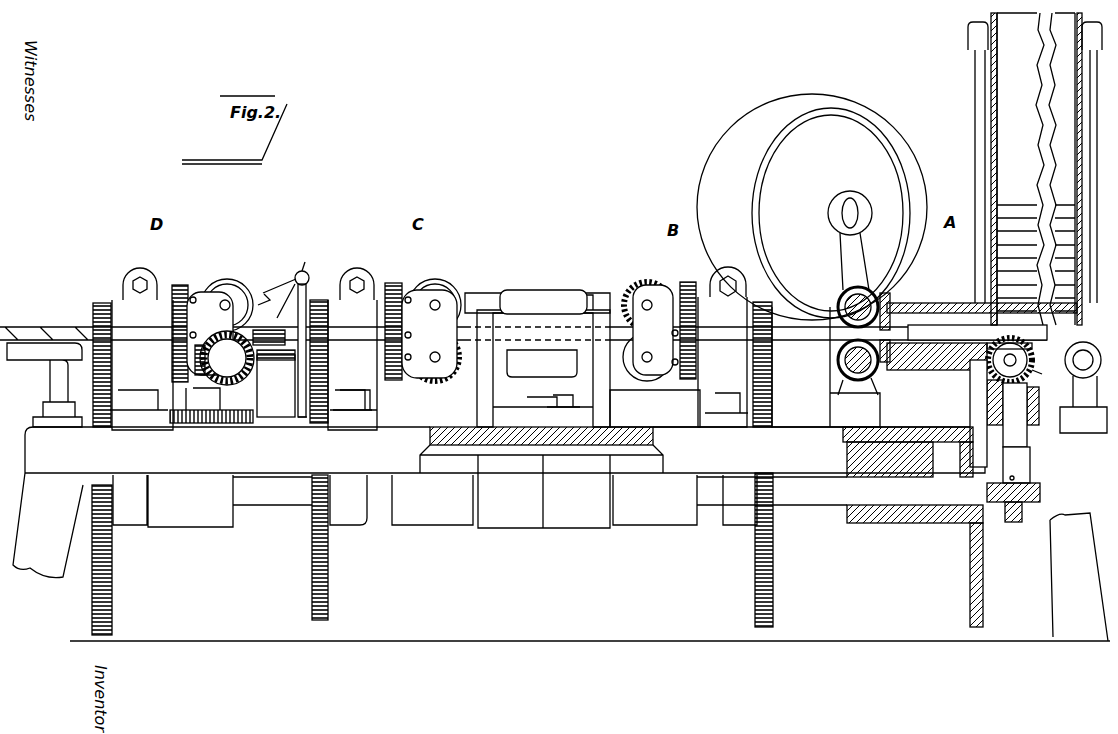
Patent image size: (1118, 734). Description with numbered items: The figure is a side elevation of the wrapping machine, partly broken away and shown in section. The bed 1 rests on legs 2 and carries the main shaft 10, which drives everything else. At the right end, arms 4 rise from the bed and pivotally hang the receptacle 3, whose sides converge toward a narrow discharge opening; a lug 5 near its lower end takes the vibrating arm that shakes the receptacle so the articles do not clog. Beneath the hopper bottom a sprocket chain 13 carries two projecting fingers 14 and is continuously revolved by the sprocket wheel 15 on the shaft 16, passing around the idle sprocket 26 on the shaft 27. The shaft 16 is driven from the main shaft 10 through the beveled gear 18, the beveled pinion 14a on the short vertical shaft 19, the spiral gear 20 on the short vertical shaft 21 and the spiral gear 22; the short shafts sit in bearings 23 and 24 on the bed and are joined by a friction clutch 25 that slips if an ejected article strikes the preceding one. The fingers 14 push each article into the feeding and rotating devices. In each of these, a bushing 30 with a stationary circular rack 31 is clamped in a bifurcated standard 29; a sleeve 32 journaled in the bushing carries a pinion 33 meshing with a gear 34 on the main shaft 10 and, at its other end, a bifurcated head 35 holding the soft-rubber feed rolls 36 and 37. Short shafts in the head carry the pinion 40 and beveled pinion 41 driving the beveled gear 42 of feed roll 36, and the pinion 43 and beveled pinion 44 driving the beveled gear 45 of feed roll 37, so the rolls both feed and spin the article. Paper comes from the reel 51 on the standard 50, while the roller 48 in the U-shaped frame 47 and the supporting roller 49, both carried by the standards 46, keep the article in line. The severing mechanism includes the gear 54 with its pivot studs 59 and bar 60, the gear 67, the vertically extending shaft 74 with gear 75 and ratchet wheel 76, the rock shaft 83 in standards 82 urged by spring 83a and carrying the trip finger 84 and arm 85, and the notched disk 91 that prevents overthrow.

The bed 1 is at (702, 466).
The legs 2 is at (1072, 520).
The receptacle 3 is at (985, 101).
The arms 4 is at (975, 68).
The lug 5 is at (997, 310).
The main shaft 10 is at (280, 500).
The sprocket chain 13 is at (1071, 387).
The projecting fingers 14 is at (1078, 332).
The beveled pinion 14a is at (993, 372).
The sprocket wheel 15 is at (1010, 358).
The shaft 16 is at (1030, 322).
The beveled gear 18 is at (1046, 372).
The short vertical shaft 19 is at (965, 470).
The spiral gear 20 is at (1040, 490).
The short vertical shaft 21 is at (1032, 455).
The spiral gear 22 is at (1012, 523).
The bearing 23 is at (985, 395).
The bearing 24 is at (978, 470).
The friction clutch 25 is at (1040, 430).
The idle sprocket 26 is at (1075, 378).
The shaft 27 is at (1036, 258).
The bifurcated standard 29 is at (118, 395).
The bushing 30 is at (982, 300).
The stationary circular rack 31 is at (172, 333).
The sleeve 32 is at (977, 335).
The pinion 33 is at (103, 303).
The gear 34 is at (112, 556).
The bifurcated head 35 is at (172, 313).
The feed roll 36 is at (208, 280).
The feed roll 37 is at (650, 382).
The pinion 40 is at (180, 285).
The beveled pinion 41 is at (663, 288).
The beveled gear 42 is at (232, 282).
The pinion 43 is at (180, 390).
The beveled pinion 44 is at (170, 385).
The beveled gear 45 is at (233, 385).
The standards 46 is at (480, 392).
The U-shaped frame 47 is at (553, 320).
The roller 48 is at (528, 300).
The roller 49 is at (520, 365).
The standard 50 is at (840, 258).
The reel 51 is at (858, 120).
The gear 54 is at (276, 383).
The pivot studs 59 is at (290, 340).
The bar 60 is at (210, 333).
The gear 67 is at (302, 423).
The vertically extending shaft 74 is at (197, 380).
The gear 75 is at (229, 385).
The ratchet wheel 76 is at (203, 385).
The standards 82 is at (350, 400).
The rock shaft 83 is at (304, 272).
The spring 83a is at (302, 266).
The trip finger 84 is at (352, 349).
The arm 85 is at (265, 292).
The disk 91 is at (248, 423).